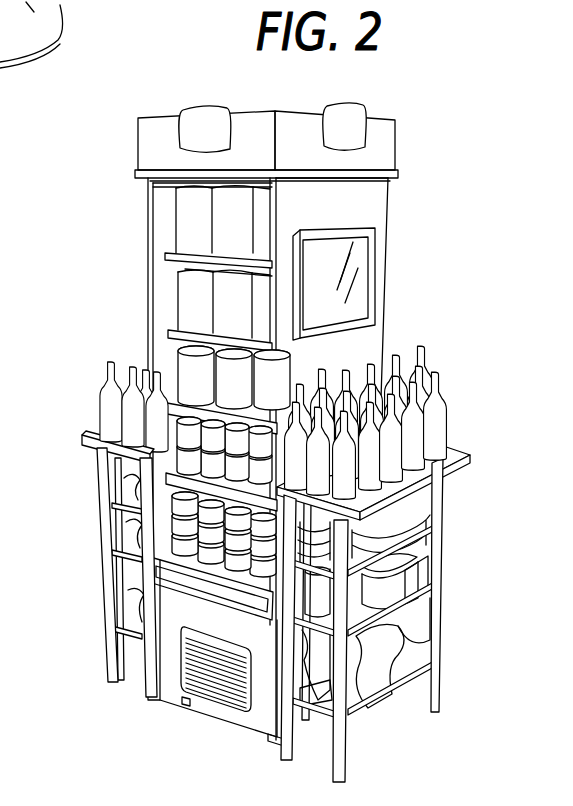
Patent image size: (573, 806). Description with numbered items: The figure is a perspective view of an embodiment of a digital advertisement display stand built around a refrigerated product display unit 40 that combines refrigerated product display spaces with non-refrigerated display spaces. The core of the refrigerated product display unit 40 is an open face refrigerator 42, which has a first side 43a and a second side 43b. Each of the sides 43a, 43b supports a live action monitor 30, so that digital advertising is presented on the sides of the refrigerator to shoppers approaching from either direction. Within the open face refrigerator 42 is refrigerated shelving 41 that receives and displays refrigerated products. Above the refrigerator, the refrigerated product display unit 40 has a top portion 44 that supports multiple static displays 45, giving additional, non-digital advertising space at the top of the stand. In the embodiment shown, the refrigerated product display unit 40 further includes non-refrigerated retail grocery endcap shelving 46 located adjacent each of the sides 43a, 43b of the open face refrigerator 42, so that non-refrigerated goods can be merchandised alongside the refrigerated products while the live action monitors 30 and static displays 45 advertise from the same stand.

The live action monitor 30 is at (363, 279).
The refrigerated product display unit 40 is at (243, 442).
The refrigerated shelving 41 is at (170, 482).
The open face refrigerator 42 is at (180, 617).
The first side 43a is at (150, 303).
The second side 43b is at (355, 350).
The top portion 44 is at (403, 157).
The static displays 45 is at (255, 119).
The non-refrigerated retail grocery endcap shelving 46 is at (100, 560).